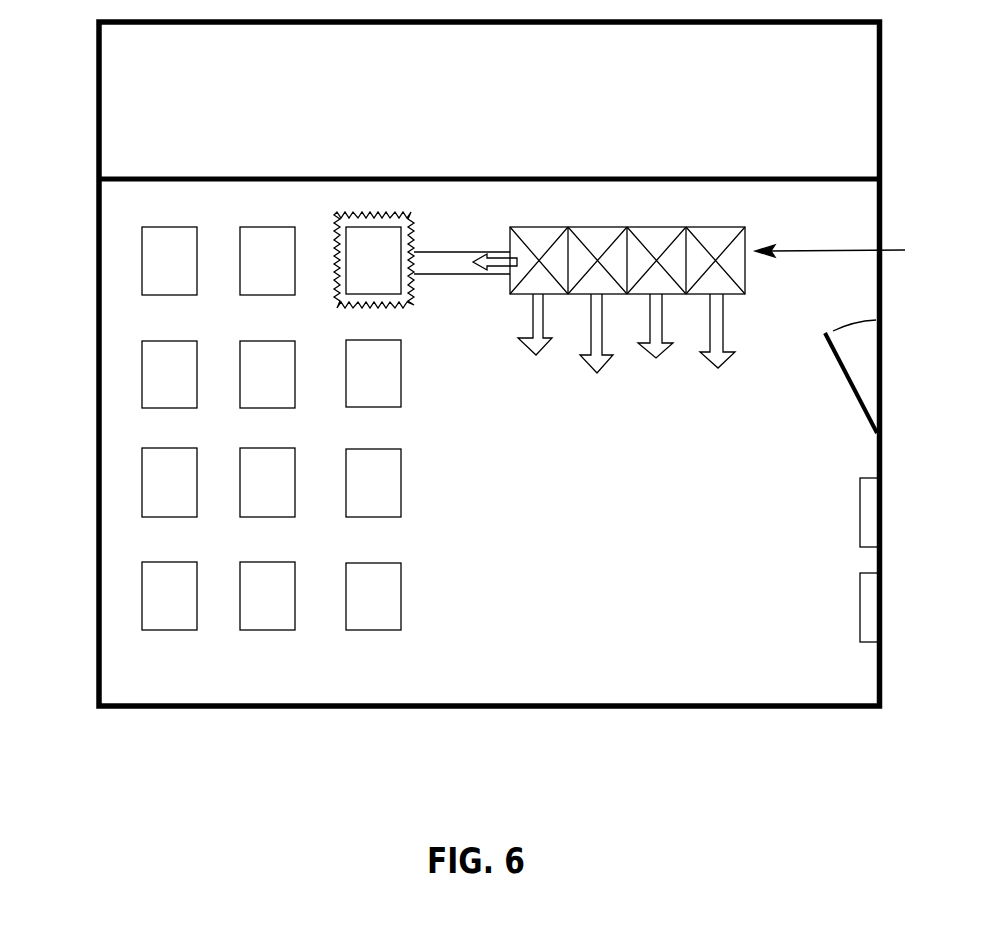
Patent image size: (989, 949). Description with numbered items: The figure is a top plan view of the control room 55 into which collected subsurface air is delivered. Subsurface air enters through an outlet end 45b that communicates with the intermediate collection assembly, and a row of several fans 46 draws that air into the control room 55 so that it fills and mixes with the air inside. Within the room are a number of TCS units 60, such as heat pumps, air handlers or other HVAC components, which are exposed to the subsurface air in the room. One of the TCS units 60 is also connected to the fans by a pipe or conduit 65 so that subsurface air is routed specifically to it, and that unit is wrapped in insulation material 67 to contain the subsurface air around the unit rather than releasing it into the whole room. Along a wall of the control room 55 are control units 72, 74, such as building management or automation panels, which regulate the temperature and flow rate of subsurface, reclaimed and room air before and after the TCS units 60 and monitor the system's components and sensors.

The control room 55 is at (608, 709).
The TCS unit 60 is at (160, 262).
The insulation material 67 is at (362, 215).
The pipe or conduit 65 is at (443, 252).
The fan 46 is at (540, 237).
The outlet end 45b is at (855, 250).
The control unit 72 is at (860, 507).
The control unit 74 is at (860, 603).